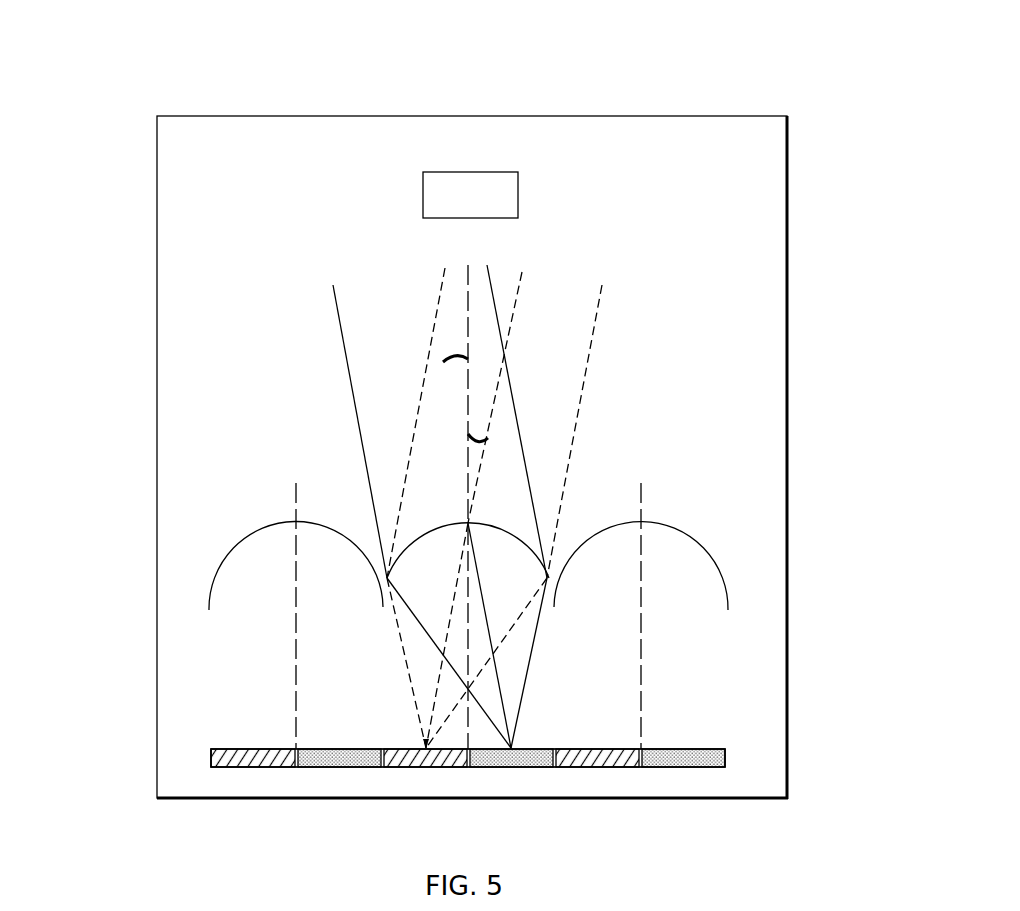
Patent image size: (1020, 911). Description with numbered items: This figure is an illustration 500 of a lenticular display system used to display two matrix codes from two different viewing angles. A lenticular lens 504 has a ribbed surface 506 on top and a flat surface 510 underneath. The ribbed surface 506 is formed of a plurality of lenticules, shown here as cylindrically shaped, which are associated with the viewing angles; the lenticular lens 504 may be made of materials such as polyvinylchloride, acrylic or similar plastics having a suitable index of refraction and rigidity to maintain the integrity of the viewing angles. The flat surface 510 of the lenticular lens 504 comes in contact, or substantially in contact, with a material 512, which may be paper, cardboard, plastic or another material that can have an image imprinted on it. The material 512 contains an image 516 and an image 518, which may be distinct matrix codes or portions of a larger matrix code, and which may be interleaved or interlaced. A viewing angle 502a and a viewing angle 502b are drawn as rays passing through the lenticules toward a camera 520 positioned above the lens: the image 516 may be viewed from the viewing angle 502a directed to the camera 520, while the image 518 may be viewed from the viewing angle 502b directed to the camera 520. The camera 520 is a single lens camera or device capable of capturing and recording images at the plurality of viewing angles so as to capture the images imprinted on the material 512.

The illustration 500 is at (696, 88).
The camera 520 is at (470, 172).
The viewing angle 502a is at (479, 422).
The viewing angle 502b is at (455, 344).
The lenticular lens 504 is at (206, 546).
The ribbed surface 506 is at (258, 520).
The flat surface 510 is at (240, 749).
The material 512 is at (725, 758).
The image 516 is at (338, 767).
The image 518 is at (250, 767).